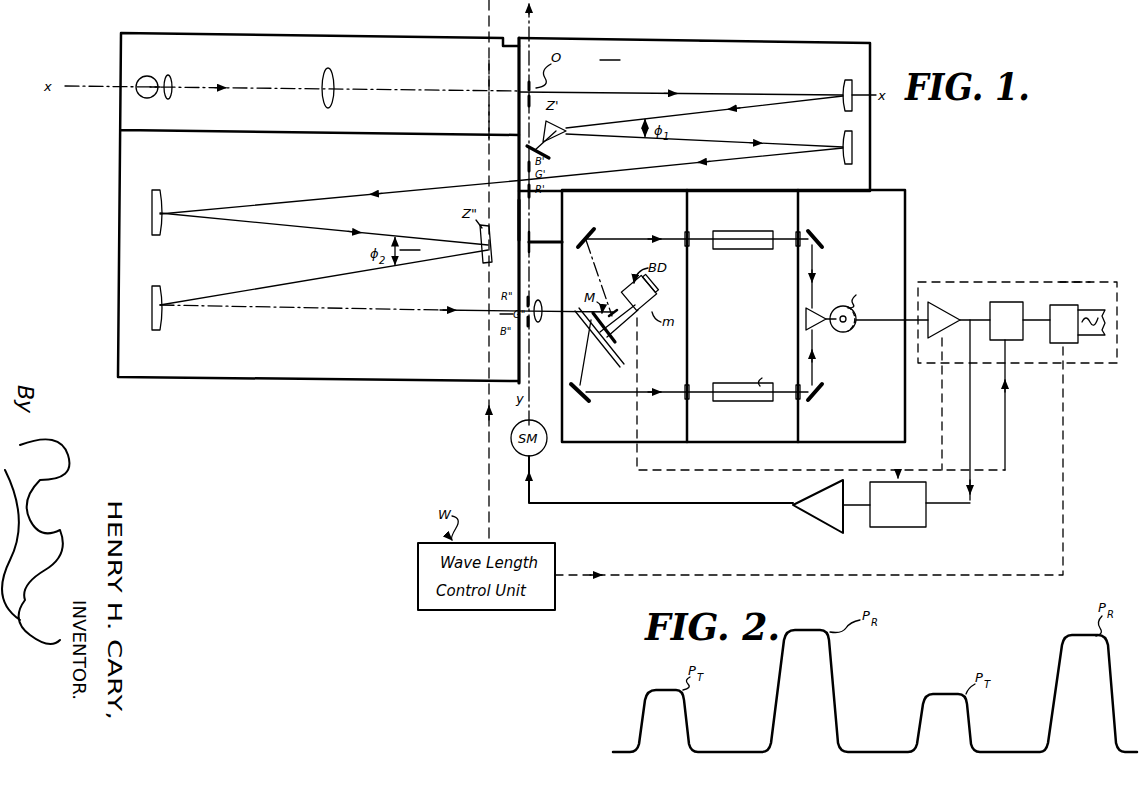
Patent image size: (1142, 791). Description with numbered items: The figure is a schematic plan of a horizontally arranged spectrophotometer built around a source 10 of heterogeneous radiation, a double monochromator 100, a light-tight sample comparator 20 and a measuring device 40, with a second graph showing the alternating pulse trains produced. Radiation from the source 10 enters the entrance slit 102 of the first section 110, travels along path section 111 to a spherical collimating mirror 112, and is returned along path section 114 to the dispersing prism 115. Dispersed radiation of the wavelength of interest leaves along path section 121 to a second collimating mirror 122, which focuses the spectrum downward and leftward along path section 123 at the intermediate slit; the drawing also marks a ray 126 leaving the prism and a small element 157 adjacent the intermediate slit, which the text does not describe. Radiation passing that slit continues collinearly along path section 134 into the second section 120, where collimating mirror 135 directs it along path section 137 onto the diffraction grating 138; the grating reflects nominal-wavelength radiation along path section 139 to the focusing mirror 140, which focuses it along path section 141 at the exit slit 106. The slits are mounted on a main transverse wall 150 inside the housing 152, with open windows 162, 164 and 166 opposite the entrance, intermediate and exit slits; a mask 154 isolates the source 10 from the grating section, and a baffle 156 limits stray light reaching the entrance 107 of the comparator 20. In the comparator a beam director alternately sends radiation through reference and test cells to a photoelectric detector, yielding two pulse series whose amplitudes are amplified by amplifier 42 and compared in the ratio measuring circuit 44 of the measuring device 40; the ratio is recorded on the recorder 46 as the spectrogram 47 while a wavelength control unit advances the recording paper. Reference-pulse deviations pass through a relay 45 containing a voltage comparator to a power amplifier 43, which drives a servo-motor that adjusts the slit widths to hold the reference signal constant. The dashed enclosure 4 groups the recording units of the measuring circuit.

The computer/recorder unit 4 is at (1075, 272).
The source 10 is at (426, 69).
The sample comparator 20 is at (749, 297).
The measuring device 40 is at (1010, 282).
The amplifier 42 is at (945, 308).
The power amplifier 43 is at (828, 513).
The ratio measuring circuit 44 is at (1012, 302).
The relay 45 is at (920, 504).
The recorder 46 is at (1070, 305).
The spectrogram 47 is at (1092, 310).
The double monochromator 100 is at (538, 222).
The entrance slit 102 is at (532, 94).
The exit slit 106 is at (540, 302).
The entrance of the comparator 107 is at (562, 310).
The first section 110 is at (733, 77).
The path section 111 is at (656, 90).
The collimating mirror 112 is at (845, 80).
The path section 114 is at (646, 116).
The dispersing prism 115 is at (563, 125).
The second section 120 is at (398, 220).
The path section 121 is at (702, 140).
The second collimating mirror 122 is at (846, 131).
The path section 123 is at (668, 162).
The refracted beam 126 is at (549, 139).
The path section 134 is at (400, 180).
The collimating mirror 135 is at (166, 200).
The path section 137 is at (287, 226).
The diffraction grating 138 is at (484, 255).
The path section 139 is at (323, 277).
The collimating mirror 140 is at (165, 318).
The path section 141 is at (340, 312).
The main transverse wall 150 is at (503, 40).
The housing 152 is at (716, 42).
The wall section or mask 154 is at (498, 132).
The baffle or mask 156 is at (548, 241).
The mirror 157 is at (553, 157).
The window 162 is at (500, 90).
The window 164 is at (522, 178).
The window 166 is at (521, 317).